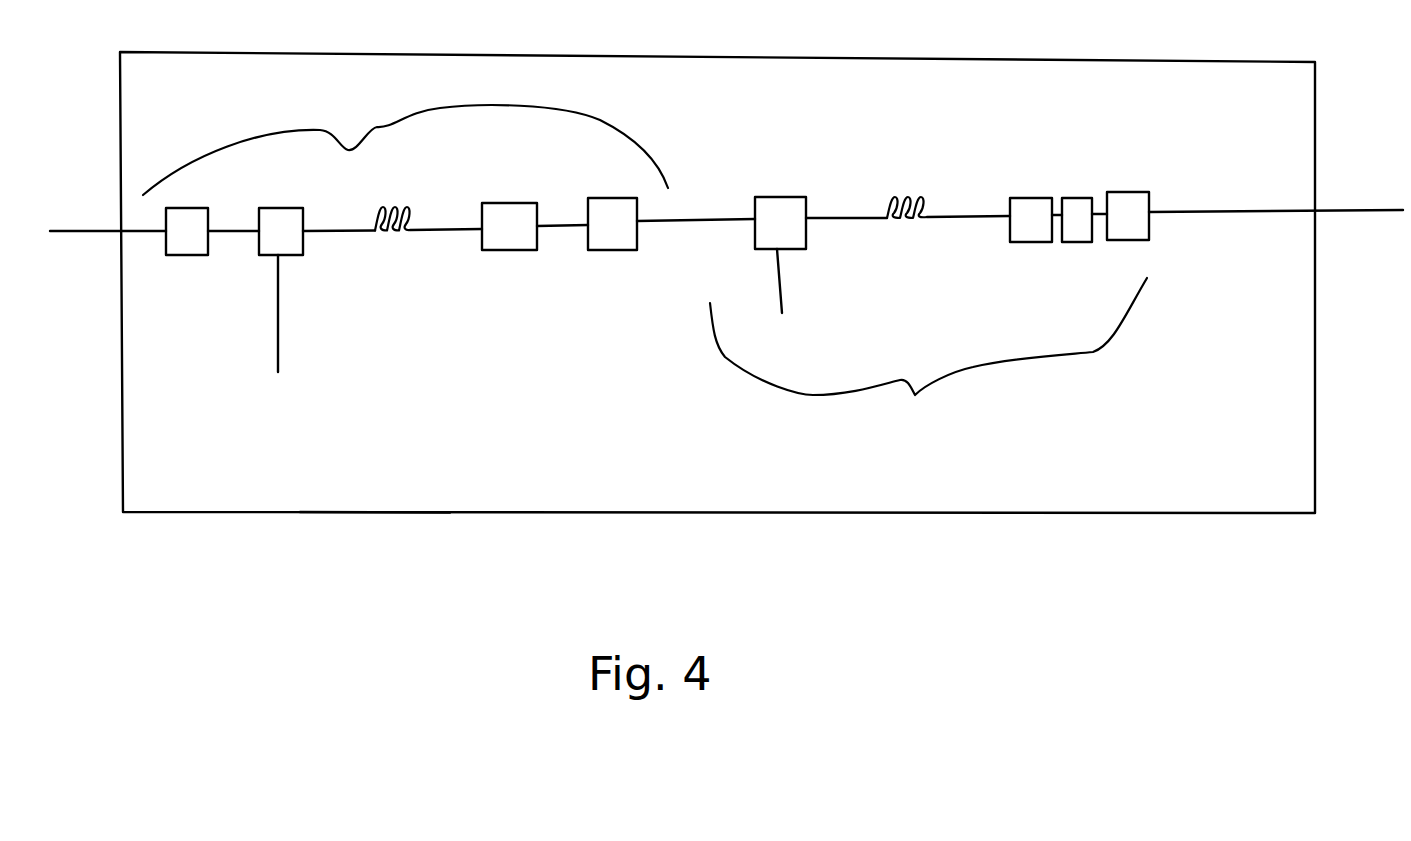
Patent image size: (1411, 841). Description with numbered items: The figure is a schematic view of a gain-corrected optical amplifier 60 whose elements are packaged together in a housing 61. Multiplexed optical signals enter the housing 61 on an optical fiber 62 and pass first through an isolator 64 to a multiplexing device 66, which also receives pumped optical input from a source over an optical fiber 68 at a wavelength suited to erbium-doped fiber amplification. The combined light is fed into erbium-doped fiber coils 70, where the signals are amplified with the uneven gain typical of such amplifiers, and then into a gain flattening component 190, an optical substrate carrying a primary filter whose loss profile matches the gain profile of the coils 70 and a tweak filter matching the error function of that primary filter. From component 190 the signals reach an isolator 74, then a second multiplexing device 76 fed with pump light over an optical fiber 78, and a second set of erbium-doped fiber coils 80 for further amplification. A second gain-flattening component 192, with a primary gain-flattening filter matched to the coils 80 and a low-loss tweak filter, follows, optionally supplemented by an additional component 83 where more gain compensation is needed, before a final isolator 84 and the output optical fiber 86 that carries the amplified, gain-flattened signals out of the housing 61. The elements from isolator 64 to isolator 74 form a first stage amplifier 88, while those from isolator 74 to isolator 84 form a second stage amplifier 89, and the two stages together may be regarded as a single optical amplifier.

The optical amplifier 60 is at (995, 513).
The housing 61 is at (368, 512).
The optical fiber 62 is at (65, 231).
The isolator 64 is at (180, 255).
The multiplexing device 66 is at (277, 208).
The optical fiber 68 is at (277, 333).
The erbium-doped fiber coils 70 is at (408, 190).
The gain flattening component 190 is at (505, 252).
The isolator 74 is at (613, 250).
The multiplexing device 76 is at (777, 197).
The optical fiber 78 is at (780, 282).
The erbium-doped fiber coils 80 is at (907, 195).
The gain-flattening component 192 is at (1030, 198).
The optional component 83 is at (1075, 242).
The isolator 84 is at (1125, 192).
The optical fiber 86 is at (1350, 211).
The first stage amplifier 88 is at (405, 146).
The second stage amplifier 89 is at (928, 356).